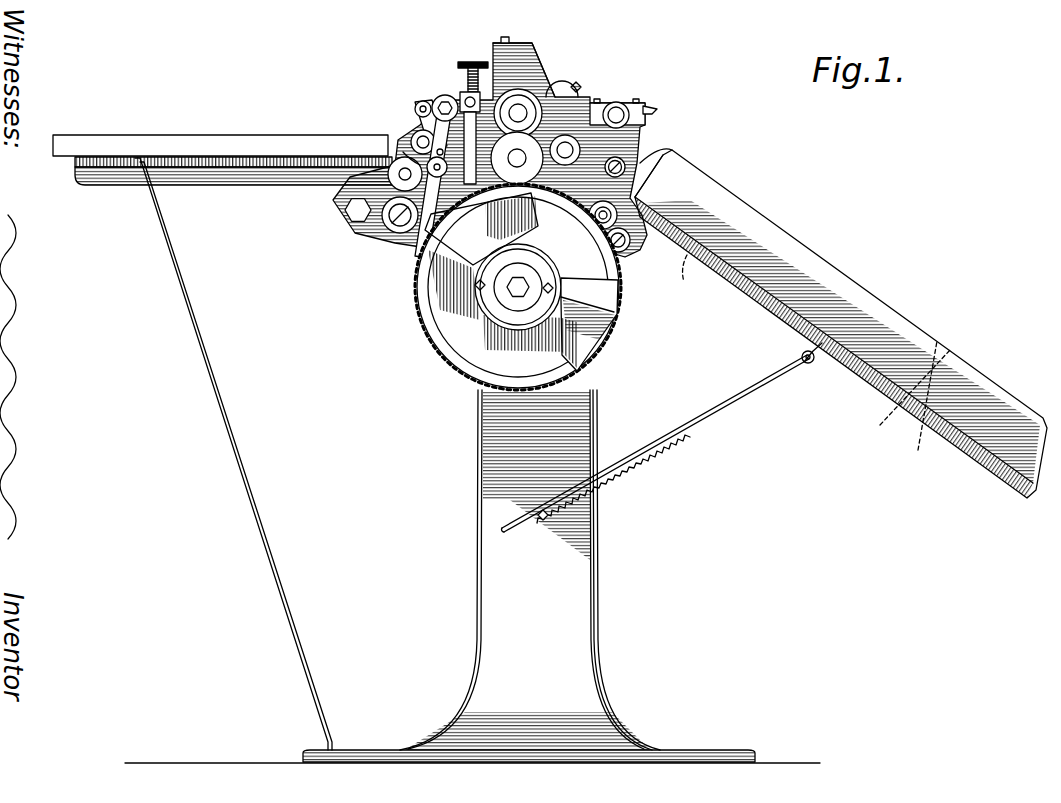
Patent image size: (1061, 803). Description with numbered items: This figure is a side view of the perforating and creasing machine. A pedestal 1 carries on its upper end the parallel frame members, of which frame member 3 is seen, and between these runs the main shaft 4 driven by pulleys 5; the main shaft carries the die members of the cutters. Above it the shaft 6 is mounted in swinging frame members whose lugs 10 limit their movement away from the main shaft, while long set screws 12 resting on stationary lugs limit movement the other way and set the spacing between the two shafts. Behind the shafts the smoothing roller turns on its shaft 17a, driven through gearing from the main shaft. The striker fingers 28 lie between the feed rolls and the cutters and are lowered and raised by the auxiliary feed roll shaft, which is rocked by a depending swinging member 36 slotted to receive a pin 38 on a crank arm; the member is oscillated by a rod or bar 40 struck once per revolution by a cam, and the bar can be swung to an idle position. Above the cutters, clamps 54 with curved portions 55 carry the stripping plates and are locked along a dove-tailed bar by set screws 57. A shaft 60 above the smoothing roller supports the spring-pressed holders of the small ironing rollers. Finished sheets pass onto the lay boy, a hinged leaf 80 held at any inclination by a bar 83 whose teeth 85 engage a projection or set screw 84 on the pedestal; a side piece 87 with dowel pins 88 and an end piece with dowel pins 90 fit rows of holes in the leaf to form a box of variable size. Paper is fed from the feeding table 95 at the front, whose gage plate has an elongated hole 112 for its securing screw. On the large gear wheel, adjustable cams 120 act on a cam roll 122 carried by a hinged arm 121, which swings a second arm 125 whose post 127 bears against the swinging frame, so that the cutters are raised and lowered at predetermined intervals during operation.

The pedestal 1 is at (492, 572).
The frame member 3 is at (363, 228).
The main shaft 4 is at (520, 156).
The pulleys 5 is at (522, 50).
The shaft 6 is at (522, 110).
The lugs 10 is at (653, 108).
The set screws 12 is at (466, 90).
The shaft 17a is at (640, 106).
The fingers 28 is at (445, 96).
The swinging member 36 is at (437, 157).
The pin 38 is at (434, 154).
The rod or bar 40 is at (423, 257).
The clamps 54 is at (503, 38).
The curved portions 55 is at (403, 152).
The set screws 57 is at (413, 105).
The shaft 60 is at (566, 134).
The hinged leaf 80 is at (860, 367).
The bar 83 is at (735, 398).
The projection or set screw 84 is at (547, 517).
The teeth 85 is at (647, 440).
The side piece 87 is at (840, 273).
The dowel pins 88 is at (806, 363).
The dowel pins 90 is at (901, 397).
The feeding table 95 is at (230, 137).
The hole 112 is at (443, 327).
The cams 120 is at (463, 257).
The arm 121 is at (396, 233).
The cam roll 122 is at (637, 197).
The arm 125 is at (640, 163).
The post 127 is at (418, 123).